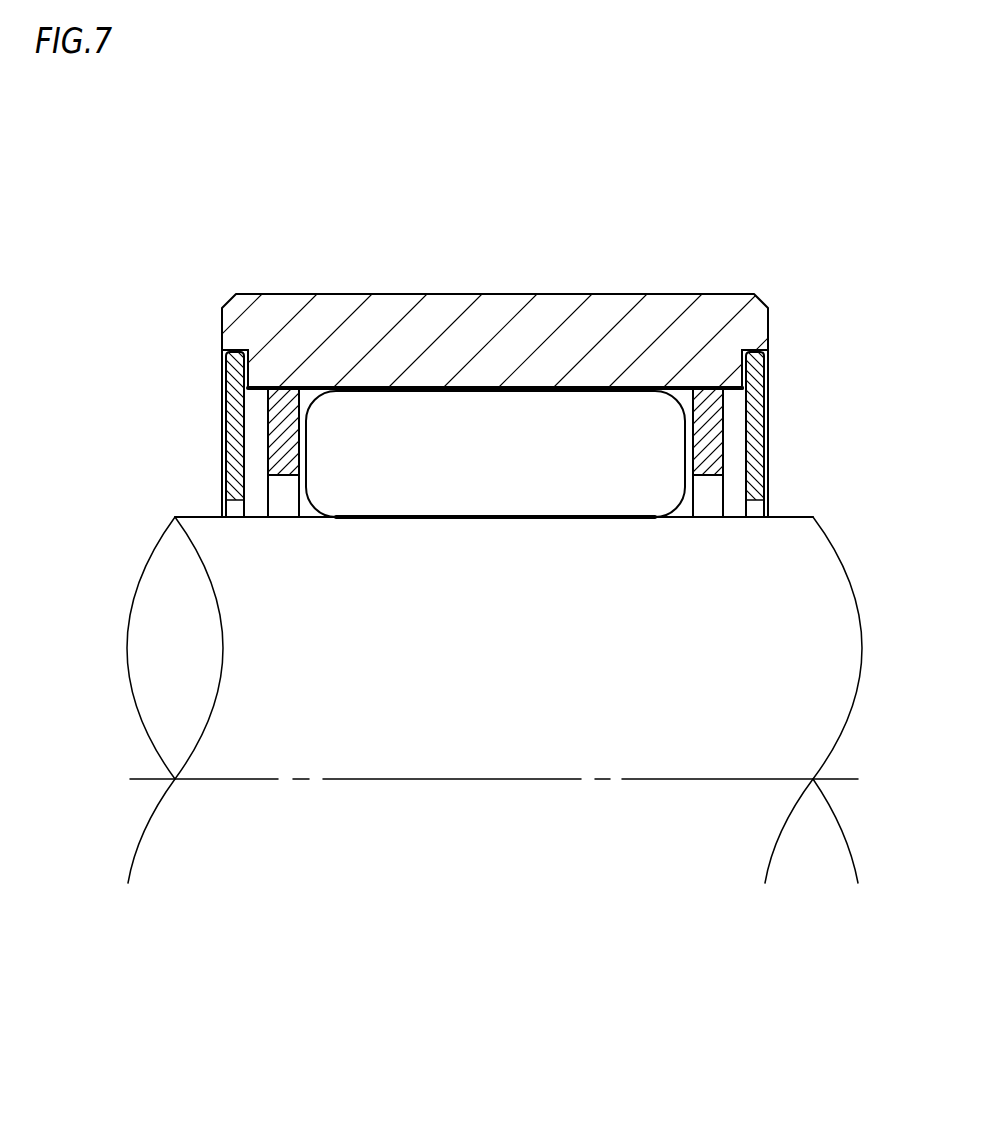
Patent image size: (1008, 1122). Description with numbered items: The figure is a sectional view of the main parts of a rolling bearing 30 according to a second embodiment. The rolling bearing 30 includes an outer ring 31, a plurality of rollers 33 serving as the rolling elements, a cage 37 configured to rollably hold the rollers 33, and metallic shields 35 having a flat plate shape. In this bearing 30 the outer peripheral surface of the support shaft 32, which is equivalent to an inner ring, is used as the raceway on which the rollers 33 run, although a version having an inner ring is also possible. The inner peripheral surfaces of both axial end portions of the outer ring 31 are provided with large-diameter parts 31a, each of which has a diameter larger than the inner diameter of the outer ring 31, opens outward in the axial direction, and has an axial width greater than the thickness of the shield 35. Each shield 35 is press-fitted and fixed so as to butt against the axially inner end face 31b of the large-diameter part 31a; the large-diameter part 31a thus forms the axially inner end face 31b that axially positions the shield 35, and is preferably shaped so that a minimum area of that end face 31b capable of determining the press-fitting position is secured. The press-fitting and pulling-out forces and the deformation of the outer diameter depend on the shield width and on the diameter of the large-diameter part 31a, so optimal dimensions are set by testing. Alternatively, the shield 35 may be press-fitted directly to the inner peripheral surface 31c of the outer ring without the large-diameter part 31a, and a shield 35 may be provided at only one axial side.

The rolling bearing 30 is at (722, 243).
The outer ring 31 is at (377, 319).
The large-diameter part 31a is at (232, 370).
The axially inner end face 31b is at (228, 380).
The inner peripheral surface 31c is at (730, 388).
The support shaft 32 is at (480, 608).
The roller 33 is at (427, 443).
The metallic shield 35 is at (232, 483).
The cage 37 is at (707, 412).